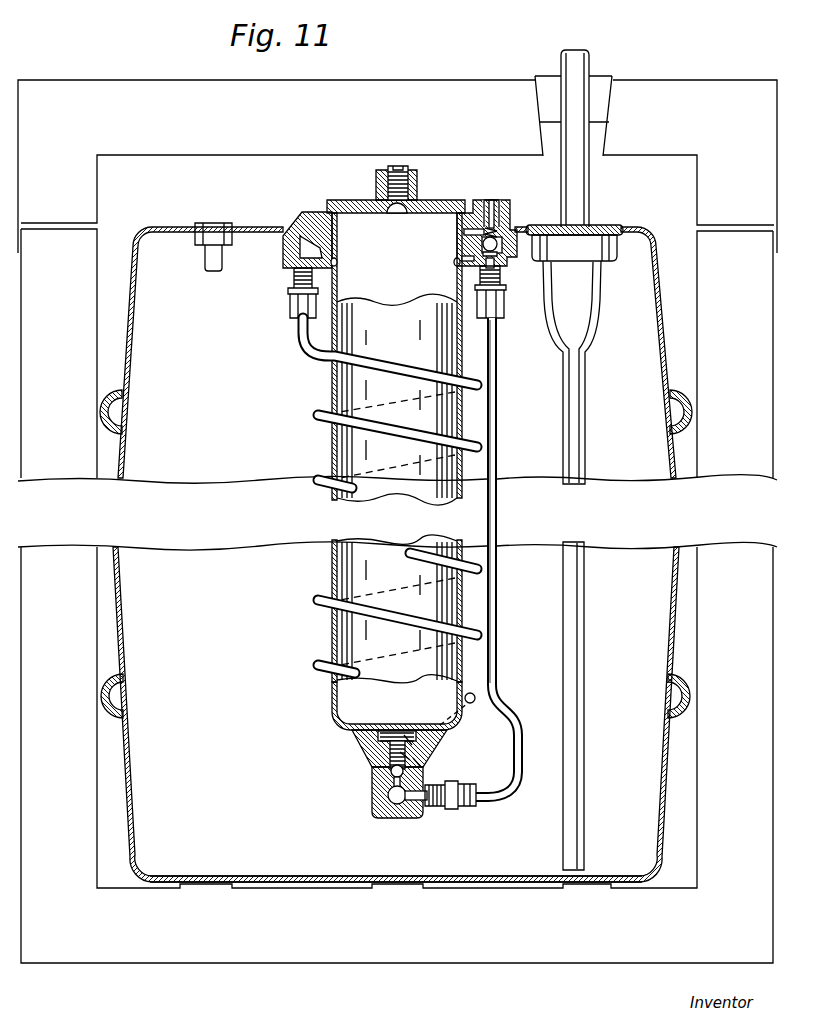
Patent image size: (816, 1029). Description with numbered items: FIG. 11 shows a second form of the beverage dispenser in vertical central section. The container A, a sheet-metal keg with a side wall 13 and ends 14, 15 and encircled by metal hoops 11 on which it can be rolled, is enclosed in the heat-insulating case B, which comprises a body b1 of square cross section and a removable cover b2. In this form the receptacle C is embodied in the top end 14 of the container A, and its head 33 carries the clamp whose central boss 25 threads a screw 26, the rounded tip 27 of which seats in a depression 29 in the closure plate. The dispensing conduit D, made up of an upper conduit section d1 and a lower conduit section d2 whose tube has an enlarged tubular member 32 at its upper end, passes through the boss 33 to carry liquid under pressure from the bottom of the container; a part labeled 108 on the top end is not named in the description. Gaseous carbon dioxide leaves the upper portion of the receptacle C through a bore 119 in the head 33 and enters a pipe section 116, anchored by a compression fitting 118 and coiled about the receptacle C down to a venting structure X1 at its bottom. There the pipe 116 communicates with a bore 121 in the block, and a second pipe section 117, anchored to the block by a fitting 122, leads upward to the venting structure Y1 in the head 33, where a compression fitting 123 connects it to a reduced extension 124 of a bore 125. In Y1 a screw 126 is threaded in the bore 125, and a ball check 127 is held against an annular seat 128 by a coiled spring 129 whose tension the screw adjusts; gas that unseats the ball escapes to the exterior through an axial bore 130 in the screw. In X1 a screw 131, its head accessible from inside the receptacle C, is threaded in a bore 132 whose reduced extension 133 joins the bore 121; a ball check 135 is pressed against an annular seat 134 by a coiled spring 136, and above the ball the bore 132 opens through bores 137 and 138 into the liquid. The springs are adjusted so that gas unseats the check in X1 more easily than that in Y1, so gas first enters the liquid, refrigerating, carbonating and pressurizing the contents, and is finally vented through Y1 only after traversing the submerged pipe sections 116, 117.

The metal hoops 11 is at (124, 412).
The side wall 13 is at (118, 578).
The end (top) of container 14 is at (250, 226).
The end of container 15 is at (214, 875).
The central boss 25 is at (376, 185).
The screw 26 is at (395, 166).
The rounded tip 27 is at (428, 199).
The depression 29 is at (395, 214).
The enlarged tubular member 32 is at (585, 313).
The boss (head of receptacle) 33 is at (328, 216).
The nut 108 is at (210, 236).
The pipe section 116 is at (300, 348).
The second pipe section 117 is at (498, 438).
The compression fitting 118 is at (284, 290).
The bore 119 is at (325, 250).
The bore 121 is at (397, 800).
The fitting 122 is at (455, 810).
The compression fitting 123 is at (486, 264).
The reduced extension 124 is at (510, 255).
The bore 125 is at (508, 228).
The screw 126 is at (502, 208).
The ball check 127 is at (482, 243).
The annular seat 128 is at (462, 258).
The coiled spring 129 is at (464, 232).
The axial bore 130 is at (490, 200).
The screw 131 is at (397, 735).
The bore 132 is at (440, 796).
The reduced extension 133 is at (388, 797).
The annular seat 134 is at (394, 781).
The ball check 135 is at (391, 770).
The coiled spring 136 is at (442, 742).
The bore 137 is at (440, 760).
The bore 138 is at (352, 745).
The container A is at (396, 525).
The case B is at (84, 967).
The receptacle C is at (329, 706).
The dispensing conduit D is at (598, 225).
The venting structure X1 is at (399, 772).
The second venting structure Y1 is at (480, 221).
The body of case b1 is at (696, 780).
The removable cover b2 is at (723, 80).
The upper conduit section d1 is at (590, 62).
The lower conduit section d2 is at (584, 616).